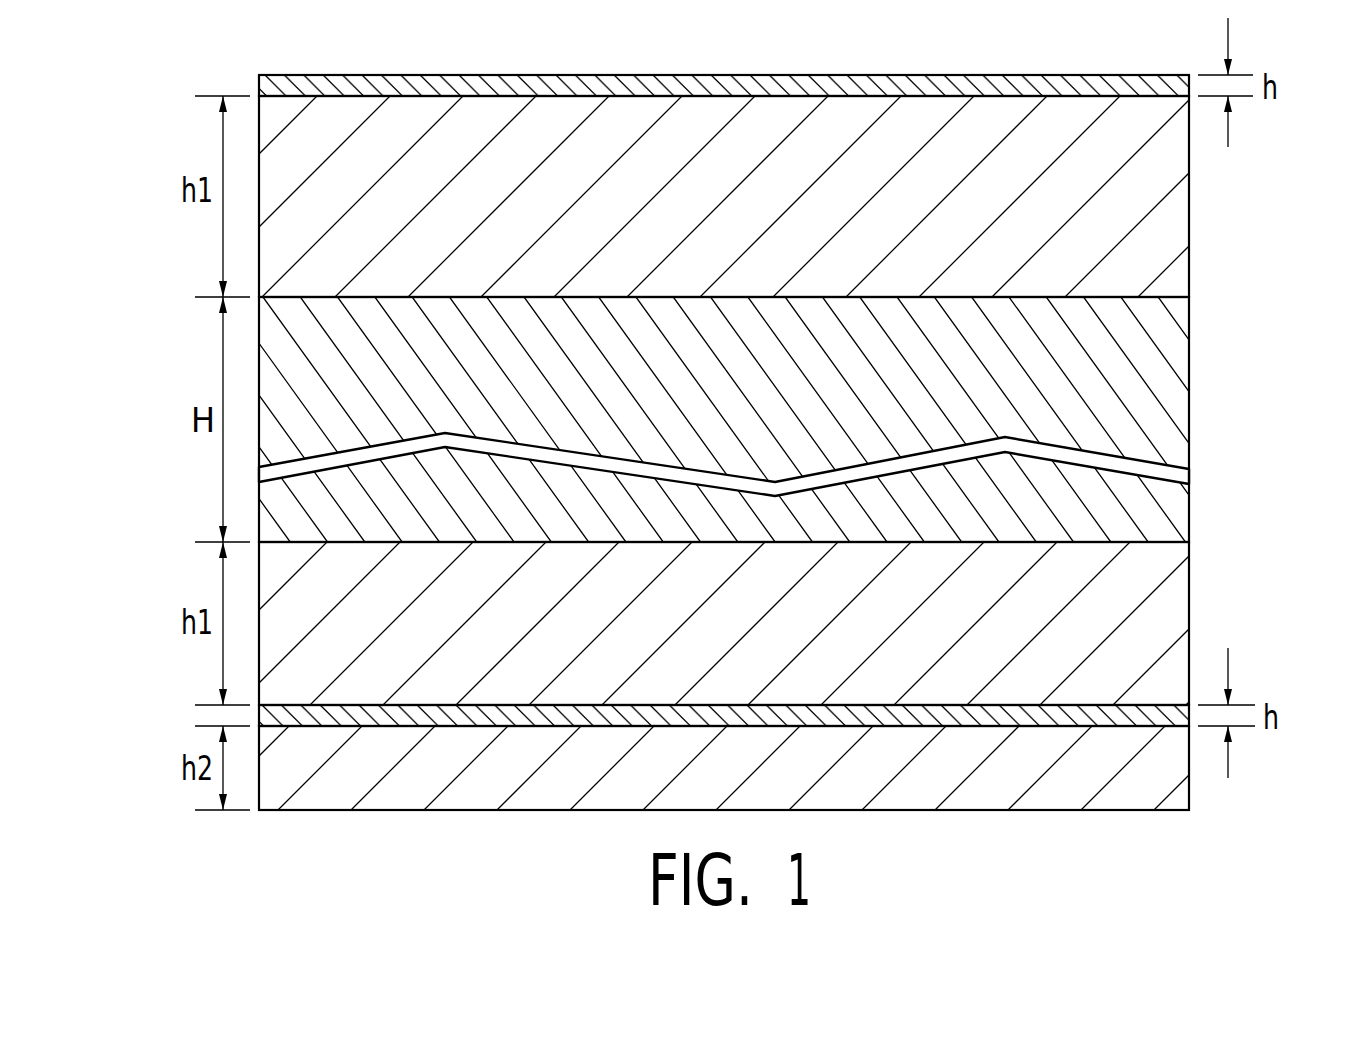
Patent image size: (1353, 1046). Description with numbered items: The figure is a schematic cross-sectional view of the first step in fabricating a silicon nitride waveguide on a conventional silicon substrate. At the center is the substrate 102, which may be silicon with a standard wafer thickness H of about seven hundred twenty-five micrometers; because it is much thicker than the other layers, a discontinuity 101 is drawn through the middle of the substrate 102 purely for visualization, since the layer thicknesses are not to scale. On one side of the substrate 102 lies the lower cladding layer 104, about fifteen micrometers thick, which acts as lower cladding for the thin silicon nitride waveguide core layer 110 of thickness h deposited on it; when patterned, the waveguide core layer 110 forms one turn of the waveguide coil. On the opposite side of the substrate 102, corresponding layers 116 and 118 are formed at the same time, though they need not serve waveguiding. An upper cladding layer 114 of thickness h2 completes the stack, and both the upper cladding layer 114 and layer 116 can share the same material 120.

The waveguide core layer 110 is at (935, 75).
The lower cladding layer 104 is at (1177, 218).
The substrate 102 is at (1180, 398).
The discontinuity 101 is at (917, 450).
The layer 116 is at (1178, 585).
The layer 118 is at (958, 705).
The upper cladding layer 114 is at (1178, 797).
The material 120 is at (711, 692).